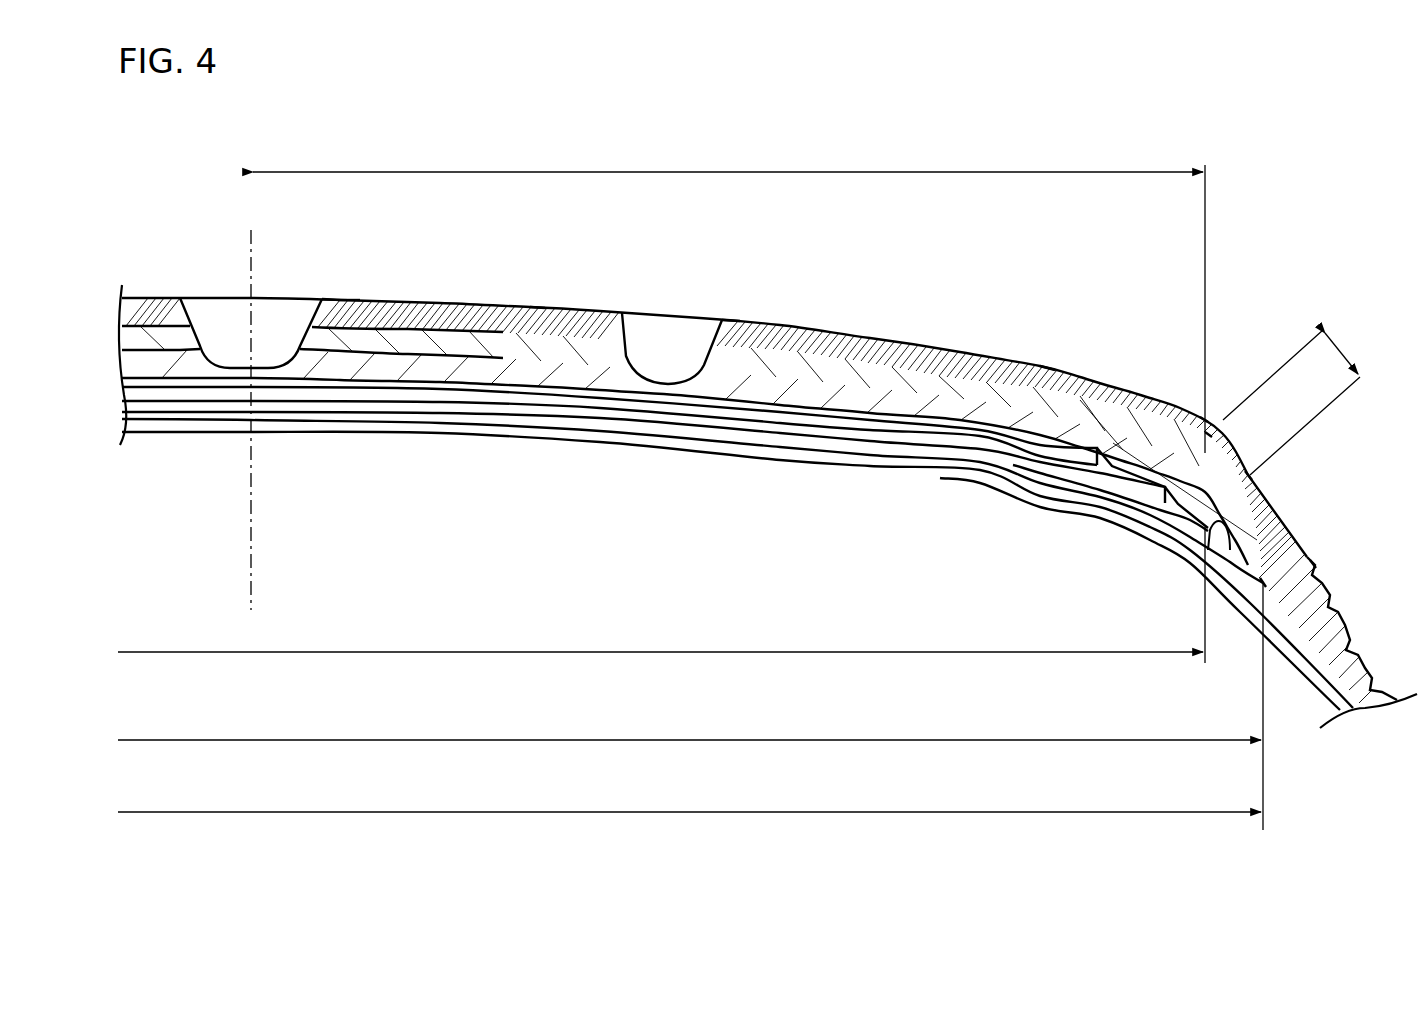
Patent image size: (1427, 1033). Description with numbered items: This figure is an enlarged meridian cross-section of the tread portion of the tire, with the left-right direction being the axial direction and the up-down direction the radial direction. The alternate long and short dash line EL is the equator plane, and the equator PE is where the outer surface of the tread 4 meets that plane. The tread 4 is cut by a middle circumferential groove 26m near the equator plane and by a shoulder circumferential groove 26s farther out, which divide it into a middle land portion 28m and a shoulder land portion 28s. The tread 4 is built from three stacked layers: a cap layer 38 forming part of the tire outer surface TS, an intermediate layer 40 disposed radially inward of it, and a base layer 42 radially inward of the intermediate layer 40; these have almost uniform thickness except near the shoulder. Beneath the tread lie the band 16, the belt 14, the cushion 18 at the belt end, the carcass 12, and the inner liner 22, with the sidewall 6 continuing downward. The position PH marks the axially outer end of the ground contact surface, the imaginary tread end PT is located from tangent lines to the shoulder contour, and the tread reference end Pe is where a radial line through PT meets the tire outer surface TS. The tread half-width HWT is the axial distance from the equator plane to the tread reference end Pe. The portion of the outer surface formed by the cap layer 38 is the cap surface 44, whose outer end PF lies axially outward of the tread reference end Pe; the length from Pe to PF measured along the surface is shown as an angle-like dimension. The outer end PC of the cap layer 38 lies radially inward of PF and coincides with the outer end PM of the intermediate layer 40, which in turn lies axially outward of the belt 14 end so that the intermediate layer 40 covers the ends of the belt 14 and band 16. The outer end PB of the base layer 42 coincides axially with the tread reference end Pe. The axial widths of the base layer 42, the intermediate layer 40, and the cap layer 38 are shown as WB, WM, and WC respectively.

The tread 4 is at (792, 316).
The sidewall 6 is at (1345, 638).
The carcass 12 is at (355, 426).
The belt 14 is at (495, 416).
The band 16 is at (430, 375).
The cushion 18 is at (1152, 503).
The inner liner 22 is at (193, 436).
The middle circumferential groove 26m is at (208, 330).
The shoulder circumferential groove 26s is at (622, 313).
The middle land portion 28m is at (488, 302).
The shoulder land portion 28s is at (877, 330).
The cap layer 38 is at (118, 306).
The intermediate layer 40 is at (126, 339).
The base layer 42 is at (125, 363).
The cap surface 44 is at (348, 298).
The tire outer surface TS is at (538, 304).
The equator PE is at (252, 297).
The equator plane EL is at (255, 572).
The ground contact surface outer end position PH is at (1047, 367).
The imaginary tread end PT is at (1205, 418).
The tread reference end Pe is at (1207, 435).
The outer end of the cap surface PF is at (1257, 475).
The outer end of the cap layer PC is at (1267, 573).
The outer end of the intermediate layer PM is at (1315, 565).
The outer end of the base layer PB is at (1225, 555).
The tread half-width HWT is at (729, 295).
The axial width of the base layer WB is at (661, 595).
The axial width of the intermediate layer WM is at (690, 706).
The axial width of the cap layer WC is at (689, 793).